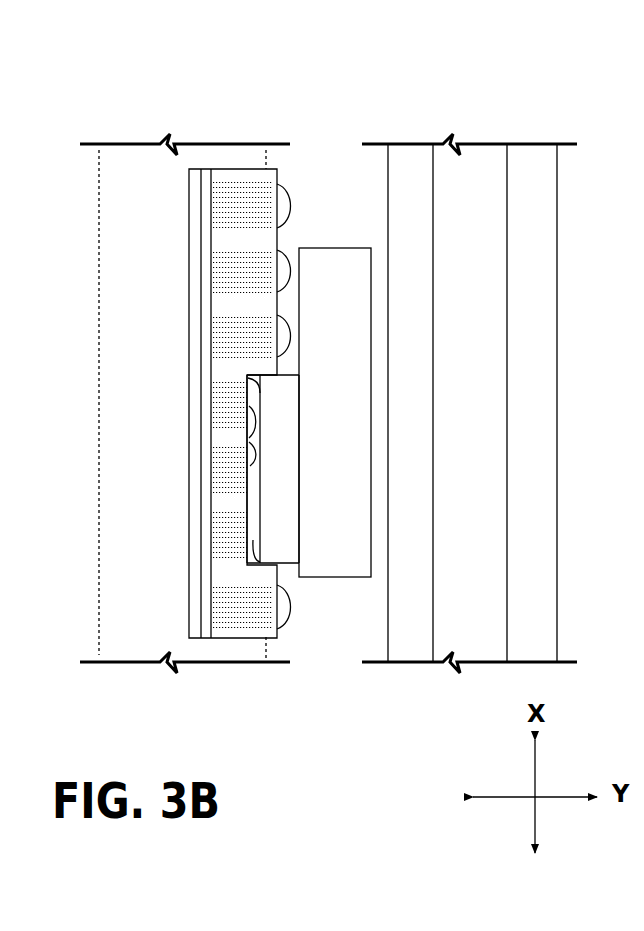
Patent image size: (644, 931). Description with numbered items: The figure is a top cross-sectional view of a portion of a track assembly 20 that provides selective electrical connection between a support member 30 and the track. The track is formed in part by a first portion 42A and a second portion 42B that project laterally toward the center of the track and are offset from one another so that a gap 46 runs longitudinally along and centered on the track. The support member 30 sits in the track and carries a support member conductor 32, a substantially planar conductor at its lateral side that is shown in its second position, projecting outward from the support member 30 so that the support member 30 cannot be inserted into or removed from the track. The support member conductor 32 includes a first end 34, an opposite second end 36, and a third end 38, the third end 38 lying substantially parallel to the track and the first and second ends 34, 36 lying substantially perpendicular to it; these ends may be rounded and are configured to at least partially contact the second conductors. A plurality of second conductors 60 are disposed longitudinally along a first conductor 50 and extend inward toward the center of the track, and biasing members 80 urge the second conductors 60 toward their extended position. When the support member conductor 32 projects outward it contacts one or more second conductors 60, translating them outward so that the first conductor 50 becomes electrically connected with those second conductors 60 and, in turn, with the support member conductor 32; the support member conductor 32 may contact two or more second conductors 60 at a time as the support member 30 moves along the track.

The track assembly 20 is at (528, 80).
The support member 30 is at (335, 588).
The support member conductor 32 is at (292, 562).
The first end 34 is at (288, 548).
The second end 36 is at (287, 376).
The third end 38 is at (262, 448).
The first portion 42A is at (215, 160).
The second portion 42B is at (416, 180).
The gap 46 is at (331, 187).
The first conductor 50 is at (206, 546).
The second conductors 60 is at (287, 197).
The biasing members 80 is at (233, 263).